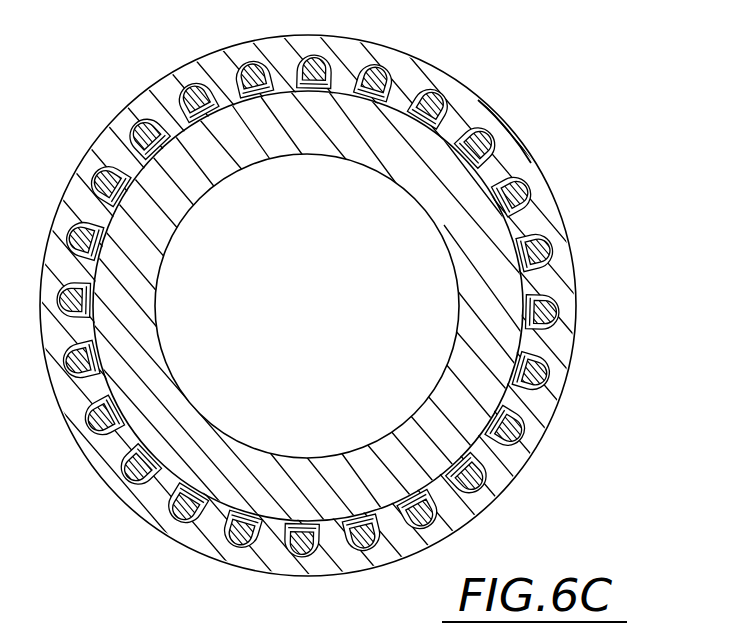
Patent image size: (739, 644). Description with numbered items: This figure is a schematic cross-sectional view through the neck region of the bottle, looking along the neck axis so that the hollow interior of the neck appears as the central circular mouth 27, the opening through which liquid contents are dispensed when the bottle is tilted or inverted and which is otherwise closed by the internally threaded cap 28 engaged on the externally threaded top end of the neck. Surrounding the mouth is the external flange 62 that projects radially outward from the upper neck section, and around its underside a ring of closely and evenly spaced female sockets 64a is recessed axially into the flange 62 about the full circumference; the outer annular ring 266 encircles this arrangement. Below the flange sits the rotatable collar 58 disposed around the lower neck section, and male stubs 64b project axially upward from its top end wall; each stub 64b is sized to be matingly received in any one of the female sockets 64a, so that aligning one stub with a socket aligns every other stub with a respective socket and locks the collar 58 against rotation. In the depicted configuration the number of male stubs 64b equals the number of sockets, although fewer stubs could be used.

The cap 28 is at (350, 192).
The external flange 62 is at (515, 155).
The outer ring 266 is at (547, 213).
The female sockets 64a is at (558, 322).
The rotatable collar 58 is at (545, 381).
The male stubs 64b is at (520, 387).
The mouth 27 is at (235, 412).